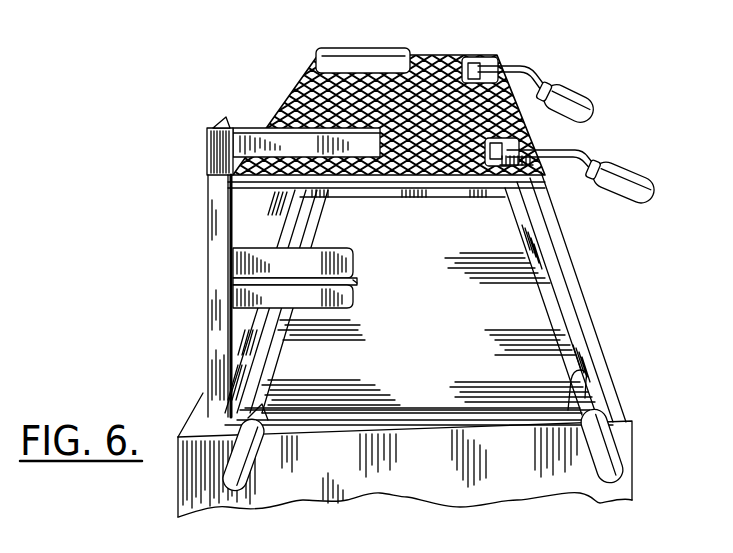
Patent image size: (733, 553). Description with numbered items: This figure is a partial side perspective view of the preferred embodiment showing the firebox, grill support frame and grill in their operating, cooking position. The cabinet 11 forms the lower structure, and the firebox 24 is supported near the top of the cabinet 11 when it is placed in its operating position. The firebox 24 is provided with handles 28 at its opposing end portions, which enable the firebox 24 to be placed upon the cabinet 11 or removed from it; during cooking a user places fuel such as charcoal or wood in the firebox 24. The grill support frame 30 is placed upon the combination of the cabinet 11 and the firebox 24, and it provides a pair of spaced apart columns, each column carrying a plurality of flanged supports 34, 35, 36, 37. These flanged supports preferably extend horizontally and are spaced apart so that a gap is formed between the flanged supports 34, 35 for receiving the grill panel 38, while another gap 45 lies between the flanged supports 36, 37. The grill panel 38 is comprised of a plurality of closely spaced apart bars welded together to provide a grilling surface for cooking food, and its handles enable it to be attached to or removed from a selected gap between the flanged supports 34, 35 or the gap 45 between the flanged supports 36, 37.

The cabinet 11 is at (433, 487).
The firebox 24 is at (445, 333).
The handles 28 is at (238, 468).
The grill support frame 30 is at (210, 127).
The flanged support 34 is at (284, 150).
The flanged support 35 is at (260, 183).
The flanged support 36 is at (238, 262).
The flanged support 37 is at (240, 302).
The grill panel 38 is at (450, 55).
The gap 45 is at (377, 266).